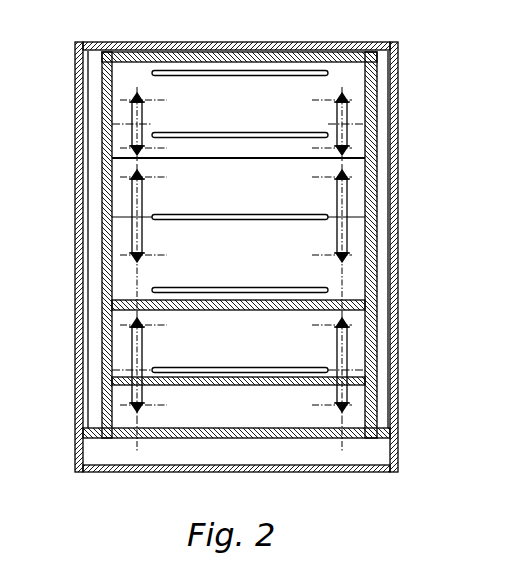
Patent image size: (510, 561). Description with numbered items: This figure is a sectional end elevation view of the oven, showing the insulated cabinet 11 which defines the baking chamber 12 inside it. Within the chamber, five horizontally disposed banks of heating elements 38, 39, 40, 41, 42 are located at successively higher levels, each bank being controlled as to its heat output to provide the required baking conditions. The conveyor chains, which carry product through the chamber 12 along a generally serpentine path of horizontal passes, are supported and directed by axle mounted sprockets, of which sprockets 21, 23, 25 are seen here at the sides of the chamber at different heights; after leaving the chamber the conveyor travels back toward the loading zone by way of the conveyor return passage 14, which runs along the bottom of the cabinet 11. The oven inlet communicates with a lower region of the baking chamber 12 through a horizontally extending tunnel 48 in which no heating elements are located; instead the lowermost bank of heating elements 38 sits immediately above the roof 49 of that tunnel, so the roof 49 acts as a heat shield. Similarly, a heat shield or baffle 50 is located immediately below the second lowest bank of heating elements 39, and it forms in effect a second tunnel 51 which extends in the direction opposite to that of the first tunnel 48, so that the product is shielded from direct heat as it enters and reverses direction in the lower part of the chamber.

The insulated cabinet 11 is at (397, 108).
The baking chamber 12 is at (150, 267).
The conveyor return passage 14 is at (302, 450).
The sprocket 21 is at (145, 354).
The sprocket 23 is at (145, 242).
The sprocket 25 is at (143, 118).
The lowermost bank of heating elements 38 is at (203, 370).
The second lowest bank of heating elements 39 is at (211, 286).
The bank of heating elements 40 is at (243, 214).
The bank of heating elements 41 is at (210, 137).
The bank of heating elements 42 is at (257, 73).
The tunnel 48 is at (243, 417).
The roof of the tunnel 49 is at (255, 386).
The heat shield or baffle 50 is at (354, 300).
The second tunnel 51 is at (207, 343).